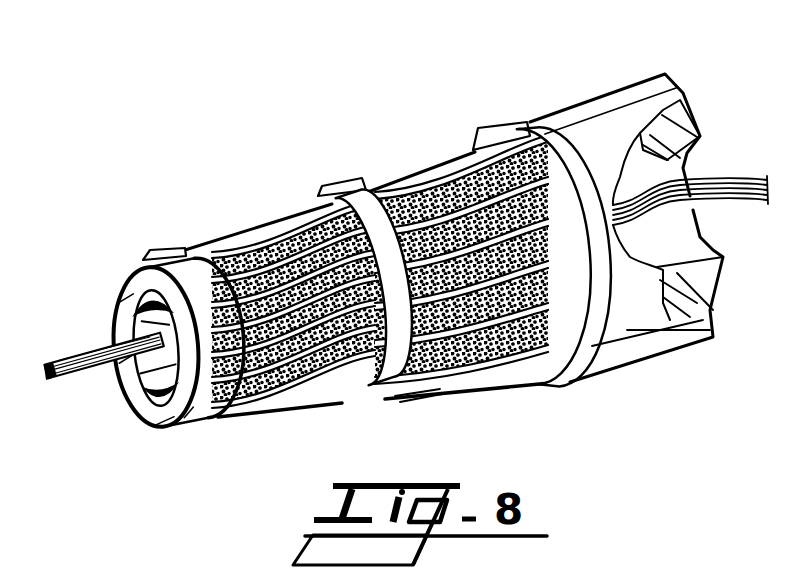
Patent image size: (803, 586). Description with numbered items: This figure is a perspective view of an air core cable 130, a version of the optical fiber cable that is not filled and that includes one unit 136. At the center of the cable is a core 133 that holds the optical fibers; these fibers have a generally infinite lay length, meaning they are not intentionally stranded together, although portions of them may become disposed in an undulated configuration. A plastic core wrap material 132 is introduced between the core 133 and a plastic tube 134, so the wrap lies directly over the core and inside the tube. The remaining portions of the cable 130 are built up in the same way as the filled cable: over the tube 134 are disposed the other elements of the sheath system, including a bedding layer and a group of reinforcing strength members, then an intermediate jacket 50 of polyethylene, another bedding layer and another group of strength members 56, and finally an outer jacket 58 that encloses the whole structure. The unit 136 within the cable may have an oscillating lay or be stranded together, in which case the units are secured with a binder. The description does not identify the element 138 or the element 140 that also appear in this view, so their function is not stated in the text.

The air core cable 130 is at (328, 98).
The plastic core wrap material 132 is at (144, 385).
The core 133 is at (50, 350).
The plastic tube 134 is at (190, 420).
The unit 136 is at (77, 385).
The shaft 138 is at (76, 352).
The intermediate jacket 50 is at (356, 396).
The strength members 56 is at (433, 391).
The outer jacket 58 is at (548, 388).
The housing 140 is at (626, 228).